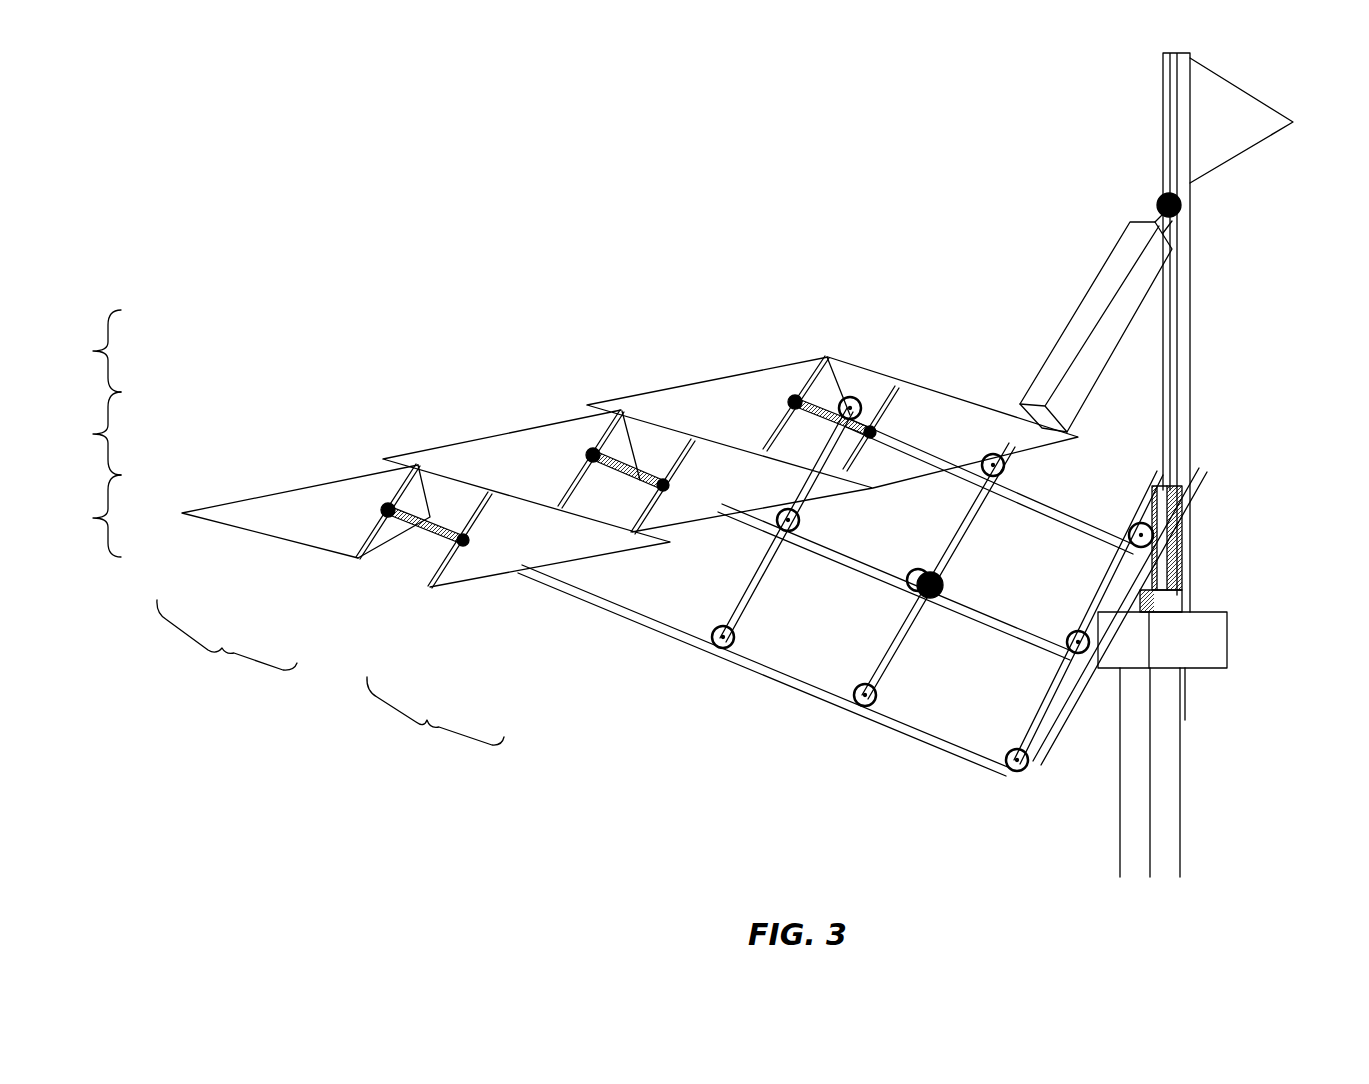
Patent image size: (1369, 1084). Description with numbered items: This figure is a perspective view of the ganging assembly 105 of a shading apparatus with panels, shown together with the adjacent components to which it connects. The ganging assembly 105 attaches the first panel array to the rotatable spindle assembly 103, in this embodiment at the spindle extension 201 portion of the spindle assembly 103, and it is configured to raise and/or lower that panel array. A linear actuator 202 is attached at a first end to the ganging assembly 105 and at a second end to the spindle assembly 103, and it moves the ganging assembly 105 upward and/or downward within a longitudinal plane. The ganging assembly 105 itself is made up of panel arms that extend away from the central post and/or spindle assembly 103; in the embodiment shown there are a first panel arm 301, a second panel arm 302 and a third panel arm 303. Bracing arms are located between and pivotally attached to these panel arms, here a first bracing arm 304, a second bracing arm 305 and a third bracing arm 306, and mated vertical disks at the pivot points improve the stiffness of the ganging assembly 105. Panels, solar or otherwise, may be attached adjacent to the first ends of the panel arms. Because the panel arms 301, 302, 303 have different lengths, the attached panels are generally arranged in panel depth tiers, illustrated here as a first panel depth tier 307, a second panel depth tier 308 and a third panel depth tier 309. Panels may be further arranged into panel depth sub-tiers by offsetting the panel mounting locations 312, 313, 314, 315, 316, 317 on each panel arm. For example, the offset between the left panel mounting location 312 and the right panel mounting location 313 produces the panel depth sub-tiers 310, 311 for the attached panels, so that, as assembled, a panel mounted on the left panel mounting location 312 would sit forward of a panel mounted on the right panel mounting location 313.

The spindle assembly 103 is at (1175, 850).
The ganging assembly 105 is at (447, 252).
The spindle extension 201 is at (1180, 322).
The linear actuator 202 is at (1120, 265).
The first panel arm 301 is at (1093, 515).
The second panel arm 302 is at (1012, 623).
The third panel arm 303 is at (648, 618).
The first bracing arm 304 is at (1065, 713).
The second bracing arm 305 is at (898, 657).
The third bracing arm 306 is at (758, 597).
The first panel depth tier 307 is at (77, 351).
The second panel depth tier 308 is at (77, 433).
The third panel depth tier 309 is at (77, 516).
The panel depth sub-tier 310 is at (227, 651).
The panel depth sub-tier 311 is at (435, 723).
The left panel mounting location 312 is at (676, 405).
The right panel mounting location 313 is at (897, 400).
The panel mounting location 314 is at (457, 460).
The panel mounting location 315 is at (703, 460).
The panel mounting location 316 is at (258, 514).
The panel mounting location 317 is at (452, 562).